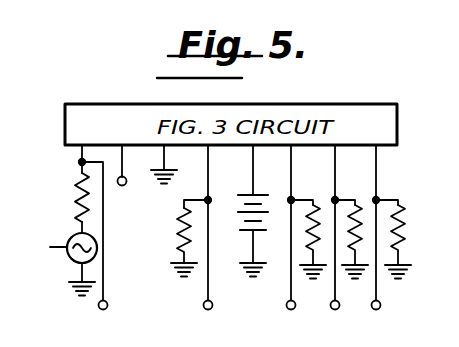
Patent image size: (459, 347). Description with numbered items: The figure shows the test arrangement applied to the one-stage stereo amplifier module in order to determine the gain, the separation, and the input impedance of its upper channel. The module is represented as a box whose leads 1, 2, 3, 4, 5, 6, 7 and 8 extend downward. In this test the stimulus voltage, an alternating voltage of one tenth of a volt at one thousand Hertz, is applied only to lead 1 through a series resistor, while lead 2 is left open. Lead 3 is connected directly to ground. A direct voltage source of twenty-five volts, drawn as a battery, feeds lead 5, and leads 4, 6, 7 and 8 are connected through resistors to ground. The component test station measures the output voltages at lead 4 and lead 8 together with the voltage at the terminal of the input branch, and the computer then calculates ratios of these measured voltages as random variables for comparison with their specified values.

The lead 1 is at (78, 161).
The lead 2 is at (131, 154).
The lead 3 is at (173, 154).
The lead 4 is at (217, 154).
The lead 5 is at (262, 154).
The lead 6 is at (300, 154).
The lead 7 is at (344, 154).
The lead 8 is at (385, 154).